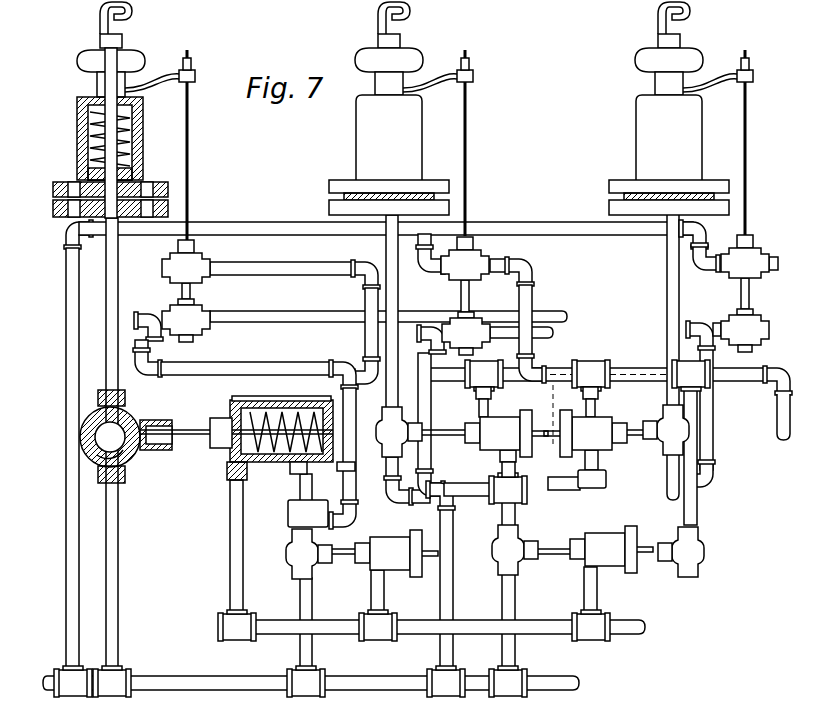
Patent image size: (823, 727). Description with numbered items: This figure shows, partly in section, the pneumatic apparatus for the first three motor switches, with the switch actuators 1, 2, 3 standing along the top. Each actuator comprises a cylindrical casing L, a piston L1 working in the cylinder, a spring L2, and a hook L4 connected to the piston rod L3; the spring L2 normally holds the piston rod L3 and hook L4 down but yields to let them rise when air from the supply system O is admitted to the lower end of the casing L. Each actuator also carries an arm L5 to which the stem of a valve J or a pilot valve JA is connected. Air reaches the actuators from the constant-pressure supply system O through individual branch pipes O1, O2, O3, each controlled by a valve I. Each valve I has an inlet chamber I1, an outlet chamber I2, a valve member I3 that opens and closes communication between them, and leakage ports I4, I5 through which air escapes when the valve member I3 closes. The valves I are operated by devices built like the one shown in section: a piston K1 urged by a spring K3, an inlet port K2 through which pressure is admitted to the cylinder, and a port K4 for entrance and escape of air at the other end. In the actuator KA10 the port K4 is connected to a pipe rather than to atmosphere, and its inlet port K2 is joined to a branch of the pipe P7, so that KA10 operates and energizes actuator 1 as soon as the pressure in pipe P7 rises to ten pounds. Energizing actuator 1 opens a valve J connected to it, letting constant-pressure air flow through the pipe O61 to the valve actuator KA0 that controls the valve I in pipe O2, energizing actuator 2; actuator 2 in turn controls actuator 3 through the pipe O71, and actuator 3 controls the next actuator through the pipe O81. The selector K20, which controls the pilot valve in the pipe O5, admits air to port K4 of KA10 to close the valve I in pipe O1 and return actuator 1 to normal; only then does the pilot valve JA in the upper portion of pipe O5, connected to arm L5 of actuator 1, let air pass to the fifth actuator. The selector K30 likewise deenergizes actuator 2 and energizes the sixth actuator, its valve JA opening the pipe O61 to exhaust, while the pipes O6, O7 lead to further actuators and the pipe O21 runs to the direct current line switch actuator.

The switch actuator 1 is at (116, 121).
The switch actuator 2 is at (401, 119).
The switch actuator 3 is at (681, 119).
The cylindrical casing L is at (77, 144).
The piston L1 is at (82, 183).
The spring L2 is at (88, 118).
The piston rod L3 is at (84, 96).
The hook L4 is at (86, 23).
The arm L5 is at (160, 92).
The valve J is at (167, 275).
The pilot valve JA is at (163, 311).
The valve I is at (386, 484).
The inlet chamber I1 is at (127, 413).
The outlet chamber I2 is at (127, 464).
The valve member I3 is at (87, 450).
The leakage port I4 is at (160, 421).
The leakage port I5 is at (147, 452).
The valve actuator KA10 is at (272, 449).
The piston K1 is at (229, 470).
The port K2 is at (266, 478).
The spring K3 is at (282, 417).
The port K4 is at (317, 471).
The valve actuator KA0 is at (507, 440).
The selector K20 is at (397, 564).
The selector K30 is at (610, 567).
The air pressure supply system O is at (66, 352).
The branch pipe O1 is at (118, 584).
The branch pipe O2 is at (453, 592).
The branch pipe O3 is at (667, 345).
The pipe O5 is at (295, 318).
The branch pipe O6 is at (547, 336).
The branch pipe O7 is at (713, 419).
The pipe O21 is at (722, 381).
The pipe O61 is at (244, 267).
The pipe O71 is at (533, 288).
The pipe O81 is at (705, 262).
The outlet pipe P7 is at (570, 636).